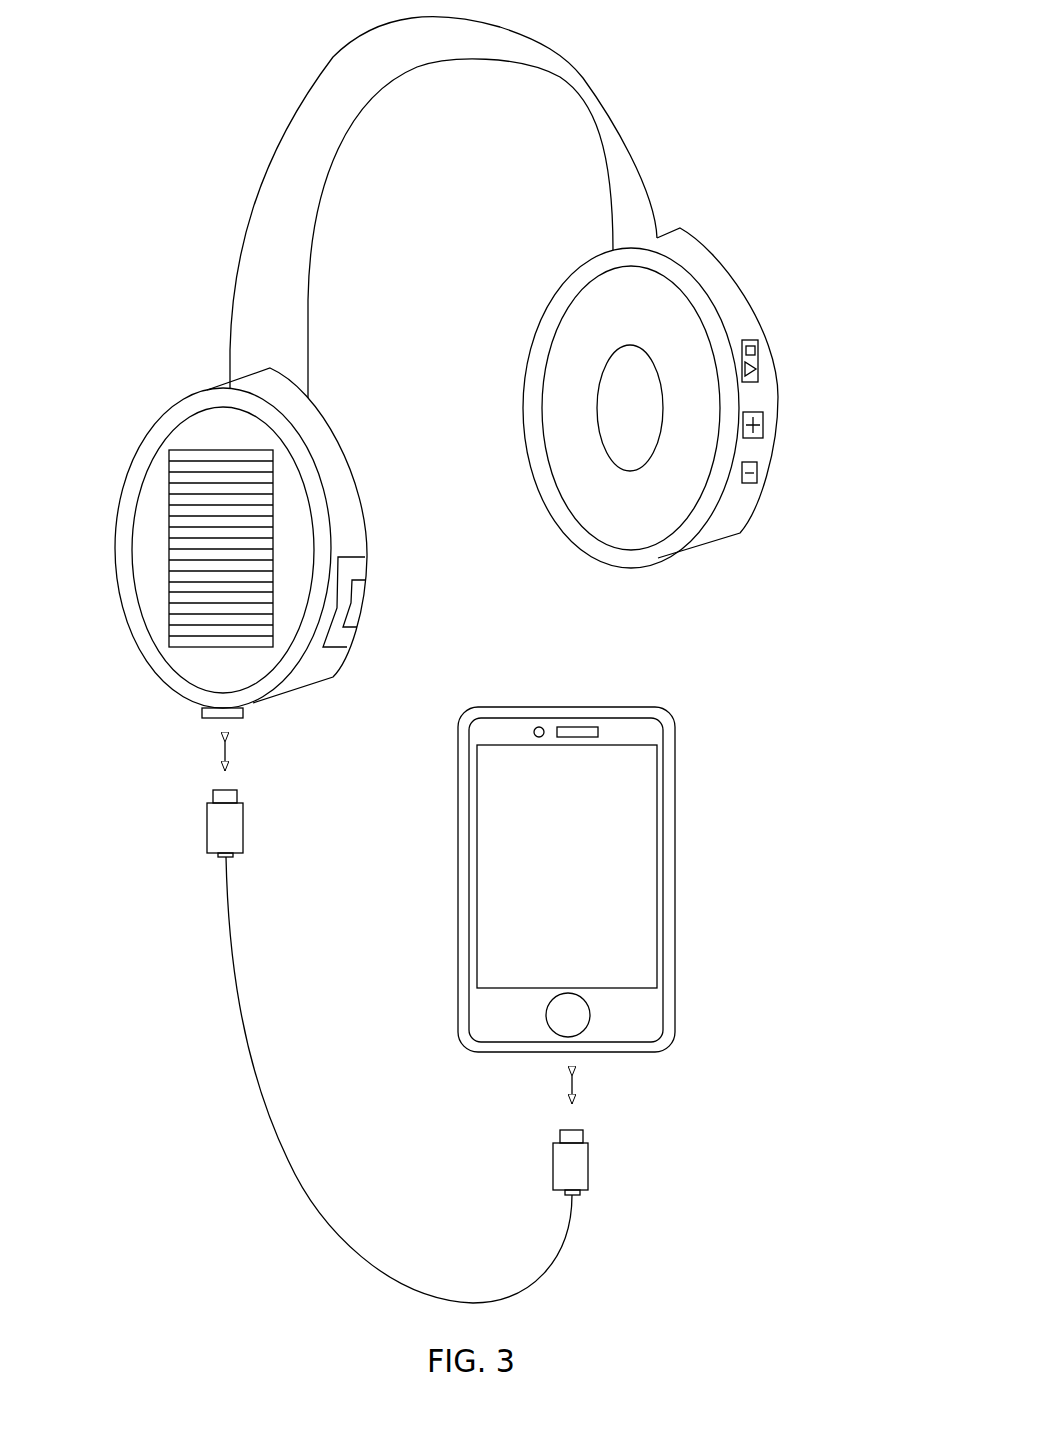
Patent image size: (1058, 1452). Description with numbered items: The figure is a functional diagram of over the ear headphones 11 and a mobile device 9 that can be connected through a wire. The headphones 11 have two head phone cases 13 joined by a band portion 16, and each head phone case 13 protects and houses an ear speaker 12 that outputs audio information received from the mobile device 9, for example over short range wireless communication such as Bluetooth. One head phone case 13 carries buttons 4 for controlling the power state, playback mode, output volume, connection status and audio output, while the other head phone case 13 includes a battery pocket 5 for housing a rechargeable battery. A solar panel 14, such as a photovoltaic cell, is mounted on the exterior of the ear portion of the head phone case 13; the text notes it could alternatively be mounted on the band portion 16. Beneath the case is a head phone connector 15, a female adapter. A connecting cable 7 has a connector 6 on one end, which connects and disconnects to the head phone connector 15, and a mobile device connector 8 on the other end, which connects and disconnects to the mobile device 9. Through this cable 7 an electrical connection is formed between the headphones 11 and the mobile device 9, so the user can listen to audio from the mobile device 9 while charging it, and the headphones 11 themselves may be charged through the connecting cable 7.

The band portion 16 is at (582, 79).
The over the ear headphones 11 is at (709, 240).
The ear speaker 12 is at (597, 403).
The buttons 4 is at (758, 363).
The head phone case 13 is at (180, 397).
The solar panel 14 is at (185, 552).
The battery pocket 5 is at (365, 577).
The head phone connector 15 is at (208, 718).
The mobile device 9 is at (672, 718).
The connector 6 is at (208, 853).
The connecting cable 7 is at (287, 1162).
The mobile device connector 8 is at (590, 1170).